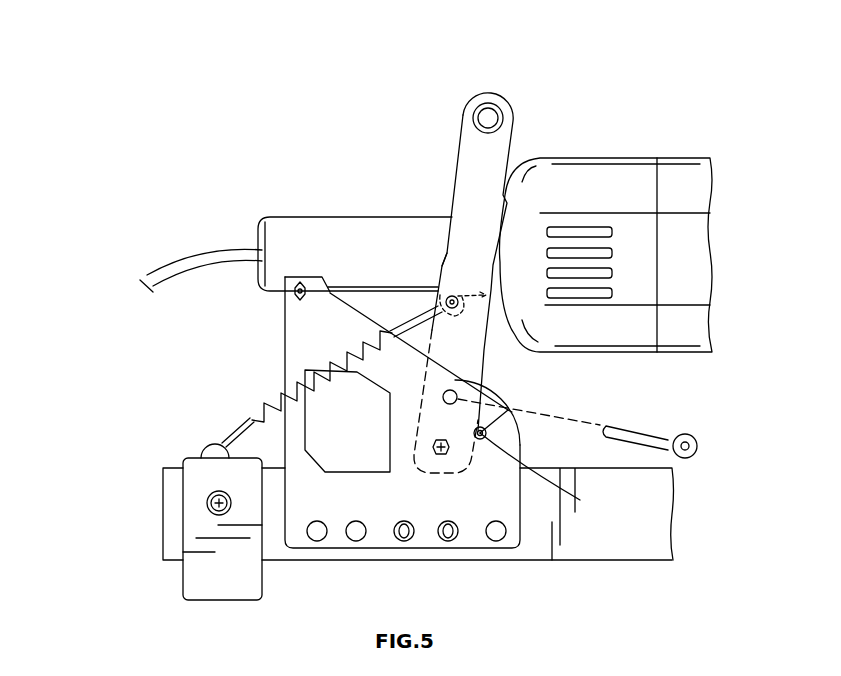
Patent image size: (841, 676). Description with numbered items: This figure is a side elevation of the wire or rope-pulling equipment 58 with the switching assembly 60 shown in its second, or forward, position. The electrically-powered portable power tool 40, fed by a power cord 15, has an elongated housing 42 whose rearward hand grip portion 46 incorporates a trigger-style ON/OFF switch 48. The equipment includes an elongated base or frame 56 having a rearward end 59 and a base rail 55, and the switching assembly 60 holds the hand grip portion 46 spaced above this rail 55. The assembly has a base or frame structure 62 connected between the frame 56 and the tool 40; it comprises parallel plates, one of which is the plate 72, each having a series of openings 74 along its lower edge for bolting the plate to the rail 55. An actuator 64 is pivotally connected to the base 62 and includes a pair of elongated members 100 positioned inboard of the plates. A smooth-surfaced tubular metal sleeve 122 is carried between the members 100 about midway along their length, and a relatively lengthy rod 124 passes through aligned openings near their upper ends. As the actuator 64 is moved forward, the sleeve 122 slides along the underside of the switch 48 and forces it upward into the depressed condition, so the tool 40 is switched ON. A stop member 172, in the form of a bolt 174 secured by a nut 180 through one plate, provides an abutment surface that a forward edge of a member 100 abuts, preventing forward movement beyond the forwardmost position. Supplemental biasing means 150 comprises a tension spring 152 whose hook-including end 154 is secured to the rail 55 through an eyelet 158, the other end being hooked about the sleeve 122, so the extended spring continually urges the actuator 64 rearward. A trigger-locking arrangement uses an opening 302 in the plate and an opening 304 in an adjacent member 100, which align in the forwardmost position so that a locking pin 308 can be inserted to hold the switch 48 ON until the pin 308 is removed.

The power cord 15 is at (160, 262).
The portable power tool 40 is at (640, 352).
The elongated housing 42 is at (693, 158).
The hand grip portion 46 is at (275, 233).
The trigger-style ON/OFF switch 48 is at (438, 293).
The base rail 55 is at (583, 552).
The base or frame 56 is at (625, 472).
The wire or rope-pulling equipment 58 is at (655, 160).
The rearward end 59 is at (163, 510).
The switching assembly 60 is at (109, 371).
The base or frame structure 62 is at (170, 341).
The actuator 64 is at (460, 160).
The plate 72 is at (523, 462).
The openings 74 is at (320, 540).
The elongated members 100 is at (458, 190).
The tubular metal sleeve 122 is at (438, 313).
The rod 124 is at (478, 100).
The biasing means 150 is at (246, 326).
The tension spring 152 is at (262, 400).
The hook-including end 154 is at (230, 437).
The eyelet 158 is at (205, 448).
The stop member 172 is at (508, 412).
The bolt 174 is at (550, 474).
The nut 180 is at (481, 445).
The opening 302 is at (521, 395).
The opening 304 is at (455, 397).
The locking pin 308 is at (660, 415).